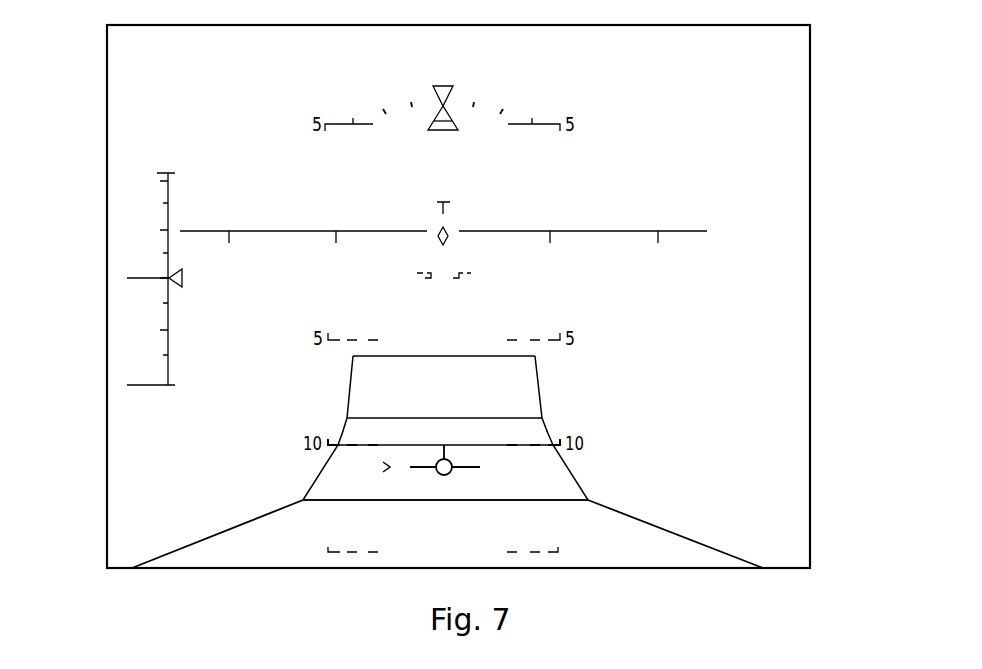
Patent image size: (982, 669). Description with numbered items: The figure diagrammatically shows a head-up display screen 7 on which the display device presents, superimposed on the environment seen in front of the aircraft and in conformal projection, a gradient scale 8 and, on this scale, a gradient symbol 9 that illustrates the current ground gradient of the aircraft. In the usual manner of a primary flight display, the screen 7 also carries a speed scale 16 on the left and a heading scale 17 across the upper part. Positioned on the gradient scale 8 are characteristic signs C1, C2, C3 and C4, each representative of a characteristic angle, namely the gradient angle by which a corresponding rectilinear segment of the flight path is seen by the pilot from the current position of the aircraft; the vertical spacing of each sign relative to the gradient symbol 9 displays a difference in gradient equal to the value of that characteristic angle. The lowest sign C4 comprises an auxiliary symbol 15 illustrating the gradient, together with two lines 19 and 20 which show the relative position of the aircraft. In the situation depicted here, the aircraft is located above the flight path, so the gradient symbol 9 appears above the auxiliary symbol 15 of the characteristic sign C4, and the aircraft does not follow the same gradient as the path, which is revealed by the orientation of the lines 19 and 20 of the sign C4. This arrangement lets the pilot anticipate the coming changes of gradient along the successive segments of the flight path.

The display screen 7 is at (682, 568).
The gradient scale 8 is at (566, 577).
The gradient symbol 9 is at (449, 474).
The auxiliary symbol 15 is at (427, 501).
The speed scale 16 is at (136, 158).
The heading scale 17 is at (726, 226).
The line 19 is at (185, 547).
The line 20 is at (650, 524).
The characteristic sign C1 is at (340, 353).
The characteristic sign C2 is at (340, 415).
The characteristic sign C3 is at (326, 449).
The characteristic sign C4 is at (272, 497).